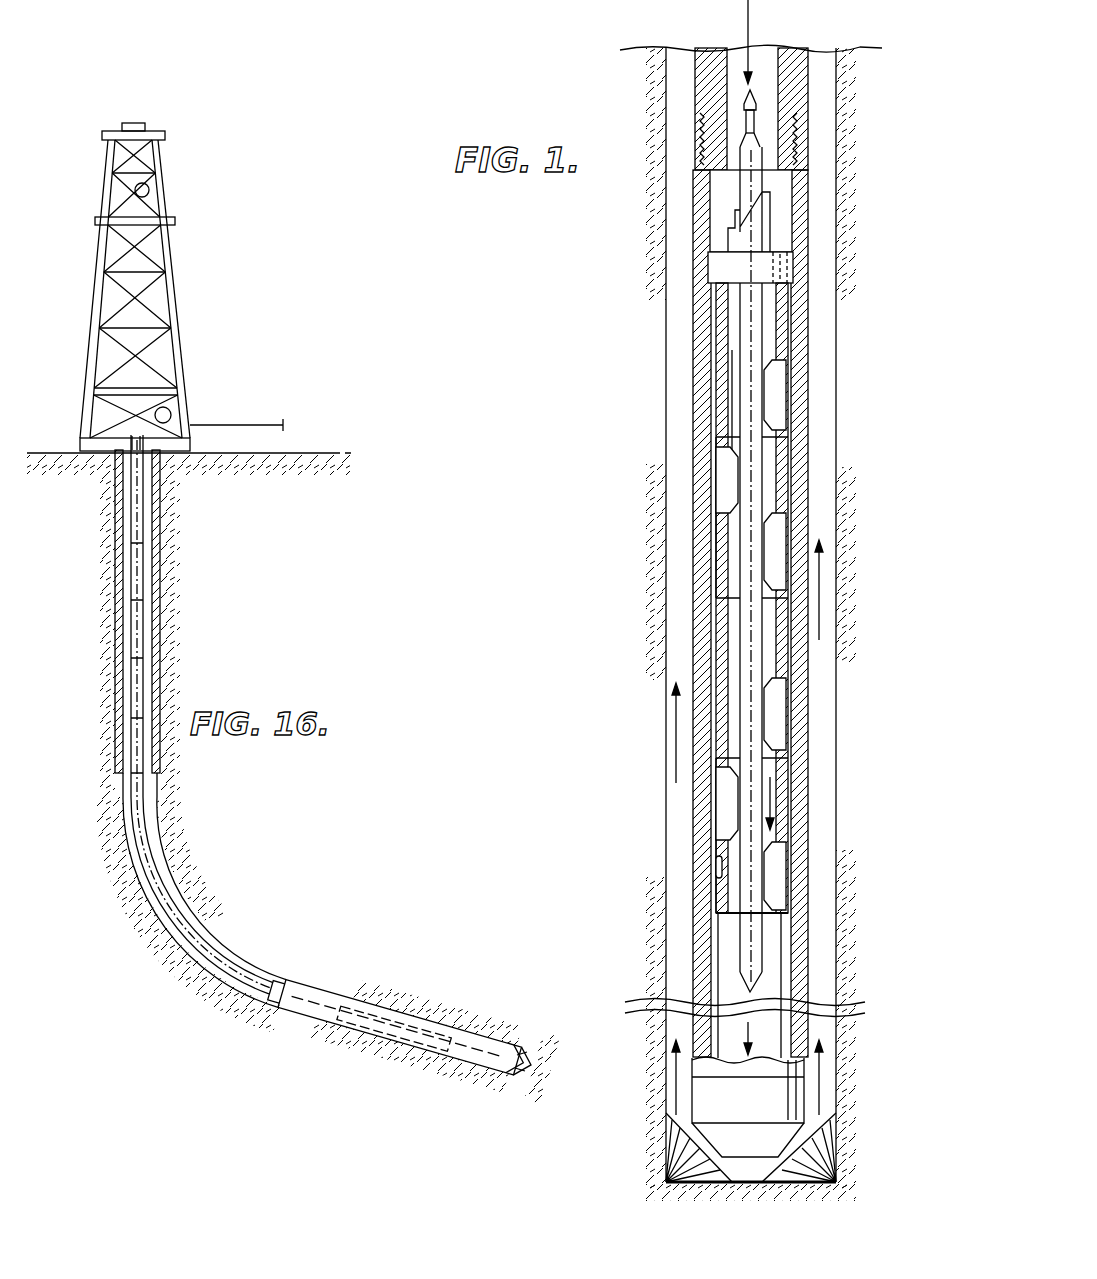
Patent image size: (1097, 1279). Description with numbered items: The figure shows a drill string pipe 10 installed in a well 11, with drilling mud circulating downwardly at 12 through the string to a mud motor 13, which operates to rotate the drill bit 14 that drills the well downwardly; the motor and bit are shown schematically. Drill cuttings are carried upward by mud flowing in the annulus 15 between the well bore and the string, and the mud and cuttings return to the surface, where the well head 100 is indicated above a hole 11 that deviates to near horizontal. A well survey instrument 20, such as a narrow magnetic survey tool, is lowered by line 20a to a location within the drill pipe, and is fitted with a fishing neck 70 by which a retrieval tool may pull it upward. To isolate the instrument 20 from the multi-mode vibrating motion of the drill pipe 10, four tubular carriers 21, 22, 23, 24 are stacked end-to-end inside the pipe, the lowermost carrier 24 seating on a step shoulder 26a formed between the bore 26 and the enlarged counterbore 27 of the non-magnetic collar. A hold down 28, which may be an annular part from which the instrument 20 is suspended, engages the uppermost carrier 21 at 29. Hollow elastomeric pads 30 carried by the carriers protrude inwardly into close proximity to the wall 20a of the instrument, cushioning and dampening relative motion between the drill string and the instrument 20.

In FIG. 16, the drill string pipe 10 is at (143, 613).
In FIG. 16, the well 11 is at (118, 631).
In FIG. 1, the drilling mud circulating downwardly 12 is at (748, 20).
In FIG. 1, the mud motor 13 is at (748, 1090).
In FIG. 16, the drill bit 14 is at (522, 1090).
In FIG. 1, the drill bit 14 is at (699, 1192).
In FIG. 1, the annulus 15 is at (675, 793).
In FIG. 16, the well survey instrument 20 is at (392, 1023).
In FIG. 1, the well survey instrument 20 is at (746, 533).
In FIG. 16, the line 20a is at (173, 363).
In FIG. 1, the tubular carrier 21 is at (713, 352).
In FIG. 1, the tubular carrier 22 is at (783, 469).
In FIG. 1, the tubular carrier 23 is at (720, 620).
In FIG. 1, the tubular carrier 24 is at (718, 835).
In FIG. 1, the bore 26 is at (718, 935).
In FIG. 1, the step shoulder 26a is at (714, 902).
In FIG. 1, the counterbore 27 is at (712, 872).
In FIG. 1, the hold down 28 is at (703, 257).
In FIG. 1, the engagement location 29 is at (705, 275).
In FIG. 1, the hollow elastomeric pads 30 is at (766, 705).
In FIG. 1, the fishing neck 70 is at (744, 98).
In FIG. 16, the well head 100 is at (210, 415).